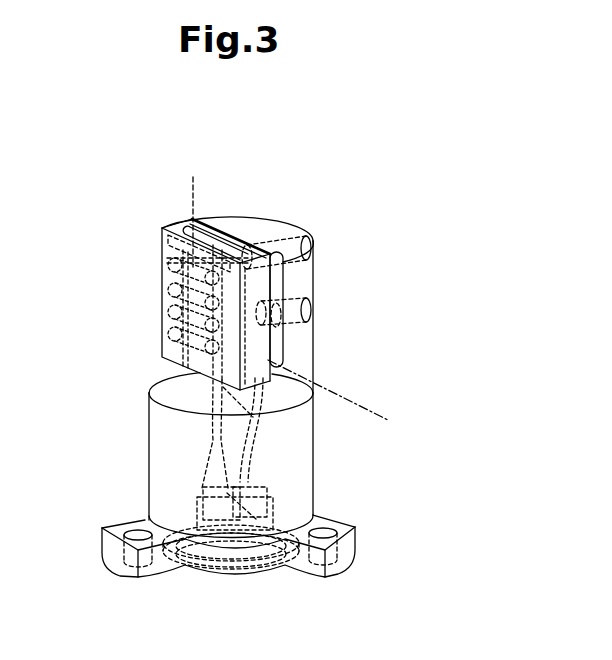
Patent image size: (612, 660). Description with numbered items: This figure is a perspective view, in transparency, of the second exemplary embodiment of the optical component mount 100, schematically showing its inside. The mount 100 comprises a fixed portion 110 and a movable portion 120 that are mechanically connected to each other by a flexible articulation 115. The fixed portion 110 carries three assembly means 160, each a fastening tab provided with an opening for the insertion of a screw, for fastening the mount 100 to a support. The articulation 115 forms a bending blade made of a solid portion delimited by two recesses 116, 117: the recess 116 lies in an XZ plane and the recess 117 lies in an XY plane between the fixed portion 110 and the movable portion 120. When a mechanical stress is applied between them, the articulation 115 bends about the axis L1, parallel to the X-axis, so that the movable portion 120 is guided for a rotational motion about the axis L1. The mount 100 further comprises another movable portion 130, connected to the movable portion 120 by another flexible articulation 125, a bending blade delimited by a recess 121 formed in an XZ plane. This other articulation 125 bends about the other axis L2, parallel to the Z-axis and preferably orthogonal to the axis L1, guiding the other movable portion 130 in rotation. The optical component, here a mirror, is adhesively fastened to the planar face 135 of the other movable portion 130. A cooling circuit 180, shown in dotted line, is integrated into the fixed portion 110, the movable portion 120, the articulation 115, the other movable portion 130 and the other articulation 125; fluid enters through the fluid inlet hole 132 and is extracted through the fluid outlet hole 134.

The optical component mount 100 is at (368, 264).
The fixed portion 110 is at (290, 452).
The articulation 115 is at (313, 362).
The recess 116 is at (250, 252).
The recess 117 is at (166, 392).
The movable portion 120 is at (227, 236).
The recess 121 is at (204, 234).
The other articulation 125 is at (192, 229).
The other movable portion 130 is at (152, 243).
The fluid inlet hole 132 is at (217, 541).
The fluid outlet hole 134 is at (240, 557).
The planar face 135 is at (168, 318).
The assembly means 160 is at (118, 532).
The cooling circuit 180 is at (215, 421).
The axis of rotation L1 is at (349, 389).
The other axis of rotation L2 is at (197, 177).